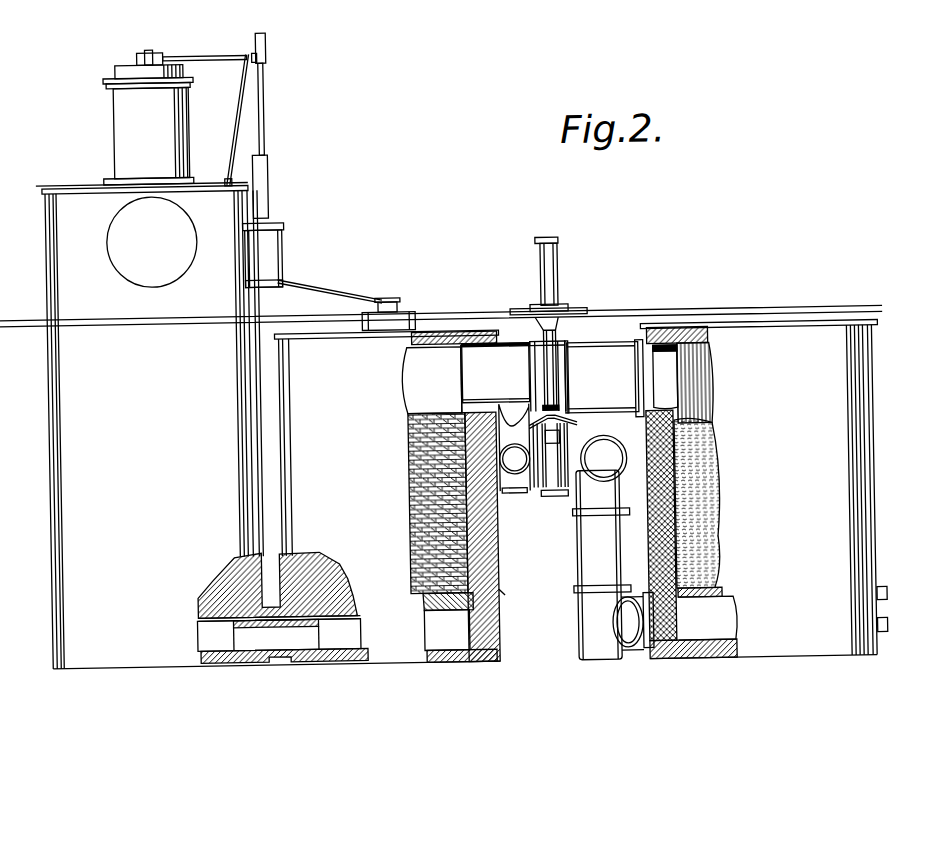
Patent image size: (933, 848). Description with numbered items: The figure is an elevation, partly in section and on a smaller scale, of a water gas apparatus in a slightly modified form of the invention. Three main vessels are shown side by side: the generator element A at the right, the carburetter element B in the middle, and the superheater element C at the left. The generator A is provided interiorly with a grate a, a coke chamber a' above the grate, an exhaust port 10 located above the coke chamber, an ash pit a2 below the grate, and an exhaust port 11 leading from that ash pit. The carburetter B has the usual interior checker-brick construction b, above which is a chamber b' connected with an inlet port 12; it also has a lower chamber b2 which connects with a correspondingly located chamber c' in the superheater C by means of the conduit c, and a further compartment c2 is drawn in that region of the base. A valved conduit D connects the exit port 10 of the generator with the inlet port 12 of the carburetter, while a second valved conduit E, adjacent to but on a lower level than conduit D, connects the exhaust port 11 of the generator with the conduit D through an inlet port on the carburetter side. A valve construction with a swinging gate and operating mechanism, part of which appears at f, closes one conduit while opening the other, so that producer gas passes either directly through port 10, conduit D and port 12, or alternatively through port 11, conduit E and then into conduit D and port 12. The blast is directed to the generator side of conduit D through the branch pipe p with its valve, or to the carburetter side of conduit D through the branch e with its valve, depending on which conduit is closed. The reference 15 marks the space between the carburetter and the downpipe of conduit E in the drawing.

The superheater element C is at (268, 423).
The carburetter element B is at (388, 443).
The generator element A is at (764, 488).
The valved conduit D is at (553, 380).
The valved conduit E is at (602, 565).
The checker-brick construction b is at (435, 537).
The chamber b' is at (441, 379).
The lower chamber b2 is at (460, 627).
The inlet port 12 is at (458, 407).
The space between scrubber and downpipe 15 is at (512, 590).
The branch pipe e is at (516, 477).
The valve spindle yoke f is at (540, 491).
The branch pipe p is at (622, 481).
The exhaust port 10 is at (678, 394).
The exhaust port 11 is at (646, 651).
The grate a is at (694, 534).
The coke chamber a' is at (709, 465).
The ash pit a2 is at (716, 632).
The conduit c is at (282, 607).
The chamber c' is at (220, 639).
The right foundation compartment c2 is at (337, 629).